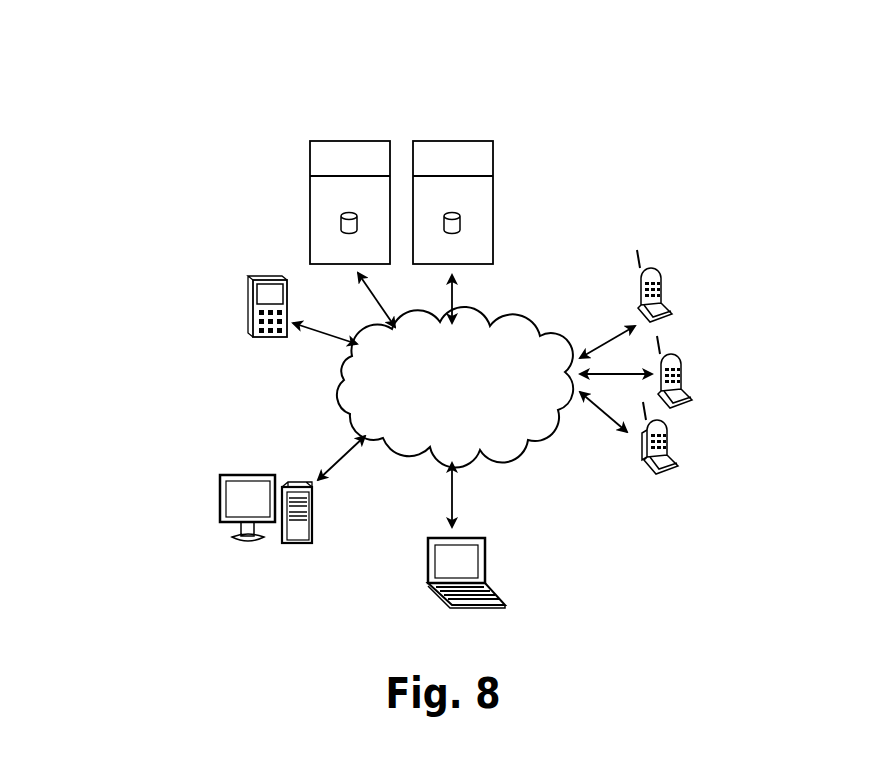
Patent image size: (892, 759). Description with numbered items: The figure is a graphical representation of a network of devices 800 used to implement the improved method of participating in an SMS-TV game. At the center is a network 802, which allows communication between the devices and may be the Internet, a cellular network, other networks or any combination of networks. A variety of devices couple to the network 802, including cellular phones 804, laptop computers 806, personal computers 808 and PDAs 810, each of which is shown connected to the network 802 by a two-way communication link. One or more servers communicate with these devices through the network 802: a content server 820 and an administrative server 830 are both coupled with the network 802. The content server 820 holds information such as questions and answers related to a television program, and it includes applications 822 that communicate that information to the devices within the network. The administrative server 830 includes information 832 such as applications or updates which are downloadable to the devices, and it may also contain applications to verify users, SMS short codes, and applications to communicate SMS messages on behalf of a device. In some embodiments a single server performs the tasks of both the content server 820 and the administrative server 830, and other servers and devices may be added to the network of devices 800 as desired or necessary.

The network of devices 800 is at (135, 140).
The network 802 is at (502, 352).
The cellular phones 804 is at (670, 295).
The laptop computers 806 is at (512, 603).
The personal computers 808 is at (225, 548).
The PDAs 810 is at (248, 278).
The content server 820 is at (493, 150).
The applications 822 is at (472, 220).
The administrative server 830 is at (310, 150).
The information 832 is at (325, 208).